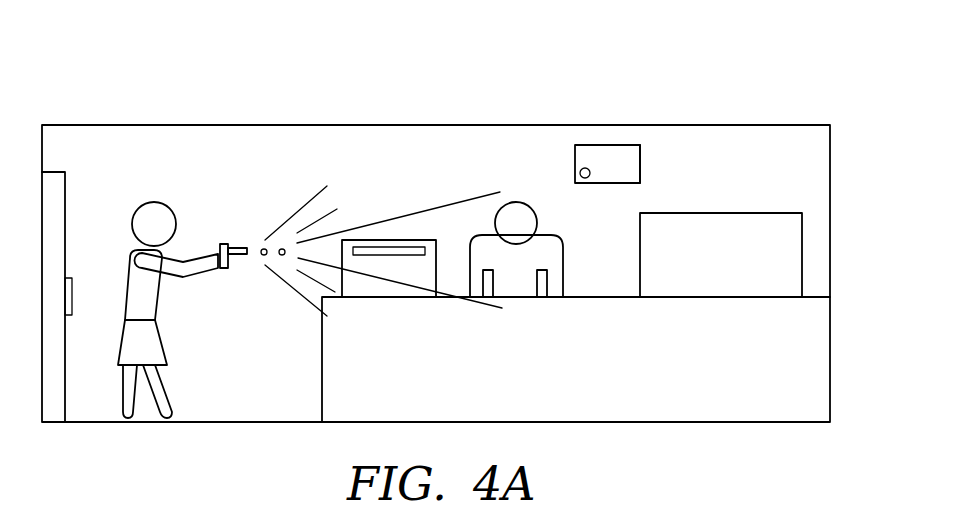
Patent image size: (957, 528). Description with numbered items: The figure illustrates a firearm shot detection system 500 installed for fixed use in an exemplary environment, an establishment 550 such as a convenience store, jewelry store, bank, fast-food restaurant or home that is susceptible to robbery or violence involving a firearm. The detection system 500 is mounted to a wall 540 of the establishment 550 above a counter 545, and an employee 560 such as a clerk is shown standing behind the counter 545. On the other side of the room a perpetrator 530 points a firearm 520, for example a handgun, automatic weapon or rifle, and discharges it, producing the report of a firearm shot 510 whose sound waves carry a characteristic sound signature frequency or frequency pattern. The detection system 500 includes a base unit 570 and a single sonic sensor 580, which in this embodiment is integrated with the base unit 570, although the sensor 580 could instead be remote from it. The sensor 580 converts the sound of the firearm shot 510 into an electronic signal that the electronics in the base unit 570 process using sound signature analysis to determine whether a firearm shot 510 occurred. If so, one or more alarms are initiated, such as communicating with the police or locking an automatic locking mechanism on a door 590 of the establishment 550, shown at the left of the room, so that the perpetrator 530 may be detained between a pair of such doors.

The firearm shot detection system 500 is at (597, 121).
The firearm shot 510 is at (289, 184).
The firearm 520 is at (233, 242).
The perpetrator 530 is at (167, 186).
The wall 540 is at (758, 156).
The counter 545 is at (550, 372).
The establishment 550 is at (477, 84).
The employee 560 is at (483, 202).
The base unit 570 is at (645, 131).
The sonic sensor 580 is at (580, 173).
The door 590 is at (67, 188).